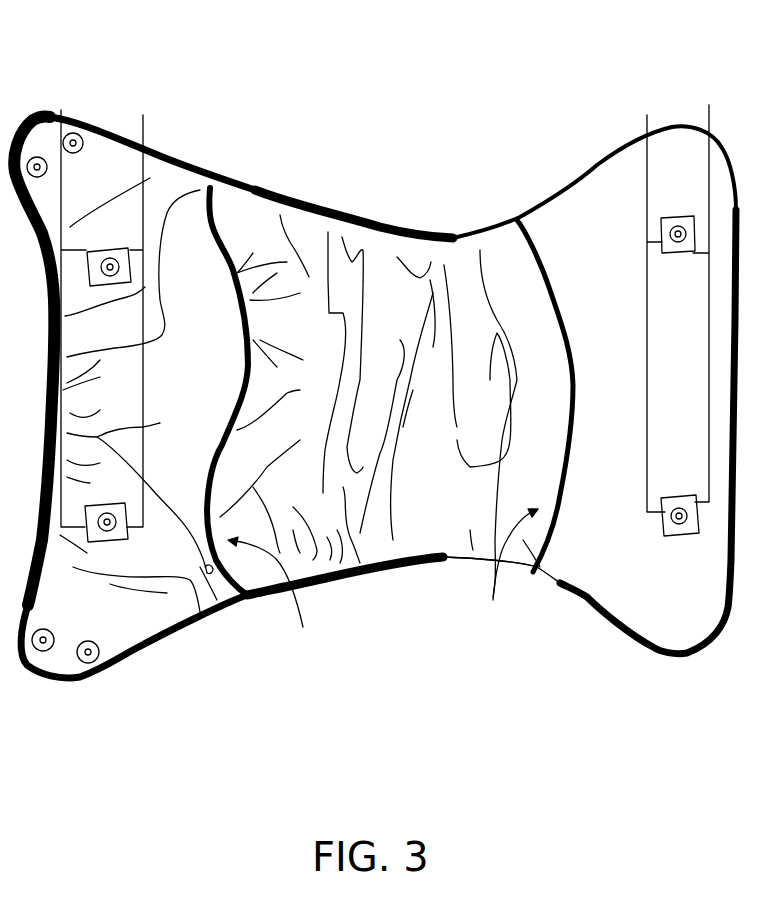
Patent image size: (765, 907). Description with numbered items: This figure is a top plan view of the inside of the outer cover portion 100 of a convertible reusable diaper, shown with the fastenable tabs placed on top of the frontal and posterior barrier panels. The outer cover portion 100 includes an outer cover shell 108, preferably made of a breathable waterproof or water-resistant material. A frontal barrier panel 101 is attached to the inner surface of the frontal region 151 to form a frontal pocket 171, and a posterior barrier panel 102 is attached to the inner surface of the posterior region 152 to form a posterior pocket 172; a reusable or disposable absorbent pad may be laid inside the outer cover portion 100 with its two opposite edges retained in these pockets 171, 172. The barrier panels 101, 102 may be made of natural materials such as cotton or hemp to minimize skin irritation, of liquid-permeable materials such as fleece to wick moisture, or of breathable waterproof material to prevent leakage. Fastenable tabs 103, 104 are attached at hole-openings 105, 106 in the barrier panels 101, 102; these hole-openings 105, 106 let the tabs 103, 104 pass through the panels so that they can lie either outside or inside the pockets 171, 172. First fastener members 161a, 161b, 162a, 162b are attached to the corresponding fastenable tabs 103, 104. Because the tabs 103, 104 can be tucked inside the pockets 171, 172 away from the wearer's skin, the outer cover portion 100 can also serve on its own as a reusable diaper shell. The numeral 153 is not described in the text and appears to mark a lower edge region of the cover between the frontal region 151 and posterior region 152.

The outer cover portion 100 is at (362, 155).
The frontal barrier panel 101 is at (593, 207).
The posterior barrier panel 102 is at (190, 210).
The fastenable tab 103 is at (647, 115).
The fastenable tab 104 is at (143, 115).
The hole-opening 105 is at (709, 105).
The hole-opening 106 is at (61, 110).
The outer cover shell 108 is at (460, 260).
The frontal region 151 is at (575, 602).
The posterior region 152 is at (192, 630).
The central lower edge 153 is at (453, 580).
The first fastener member 161a is at (677, 228).
The first fastener member 161b is at (676, 522).
The first fastener member 162a is at (103, 262).
The first fastener member 162b is at (106, 528).
The frontal pocket 171 is at (508, 568).
The posterior pocket 172 is at (275, 598).